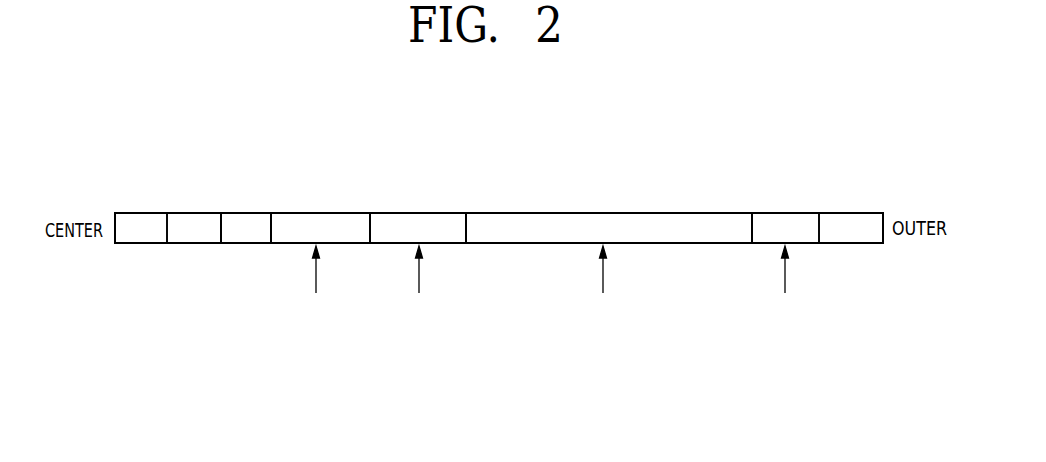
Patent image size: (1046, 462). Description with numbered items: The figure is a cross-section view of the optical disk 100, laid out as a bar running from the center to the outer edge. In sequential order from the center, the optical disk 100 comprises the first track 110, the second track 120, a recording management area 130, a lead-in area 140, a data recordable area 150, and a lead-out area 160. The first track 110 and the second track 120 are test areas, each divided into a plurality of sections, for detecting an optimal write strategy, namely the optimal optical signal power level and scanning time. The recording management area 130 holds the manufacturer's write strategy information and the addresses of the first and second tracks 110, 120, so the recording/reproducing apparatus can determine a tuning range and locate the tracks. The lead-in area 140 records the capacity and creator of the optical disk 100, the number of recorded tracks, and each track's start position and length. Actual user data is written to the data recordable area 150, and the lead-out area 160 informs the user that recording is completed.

The optical disk 100 is at (862, 193).
The first track 110 is at (192, 212).
The second track 120 is at (244, 212).
The recording management area 130 is at (322, 212).
The lead-in area 140 is at (414, 212).
The data recordable area 150 is at (598, 212).
The lead-out area 160 is at (784, 212).